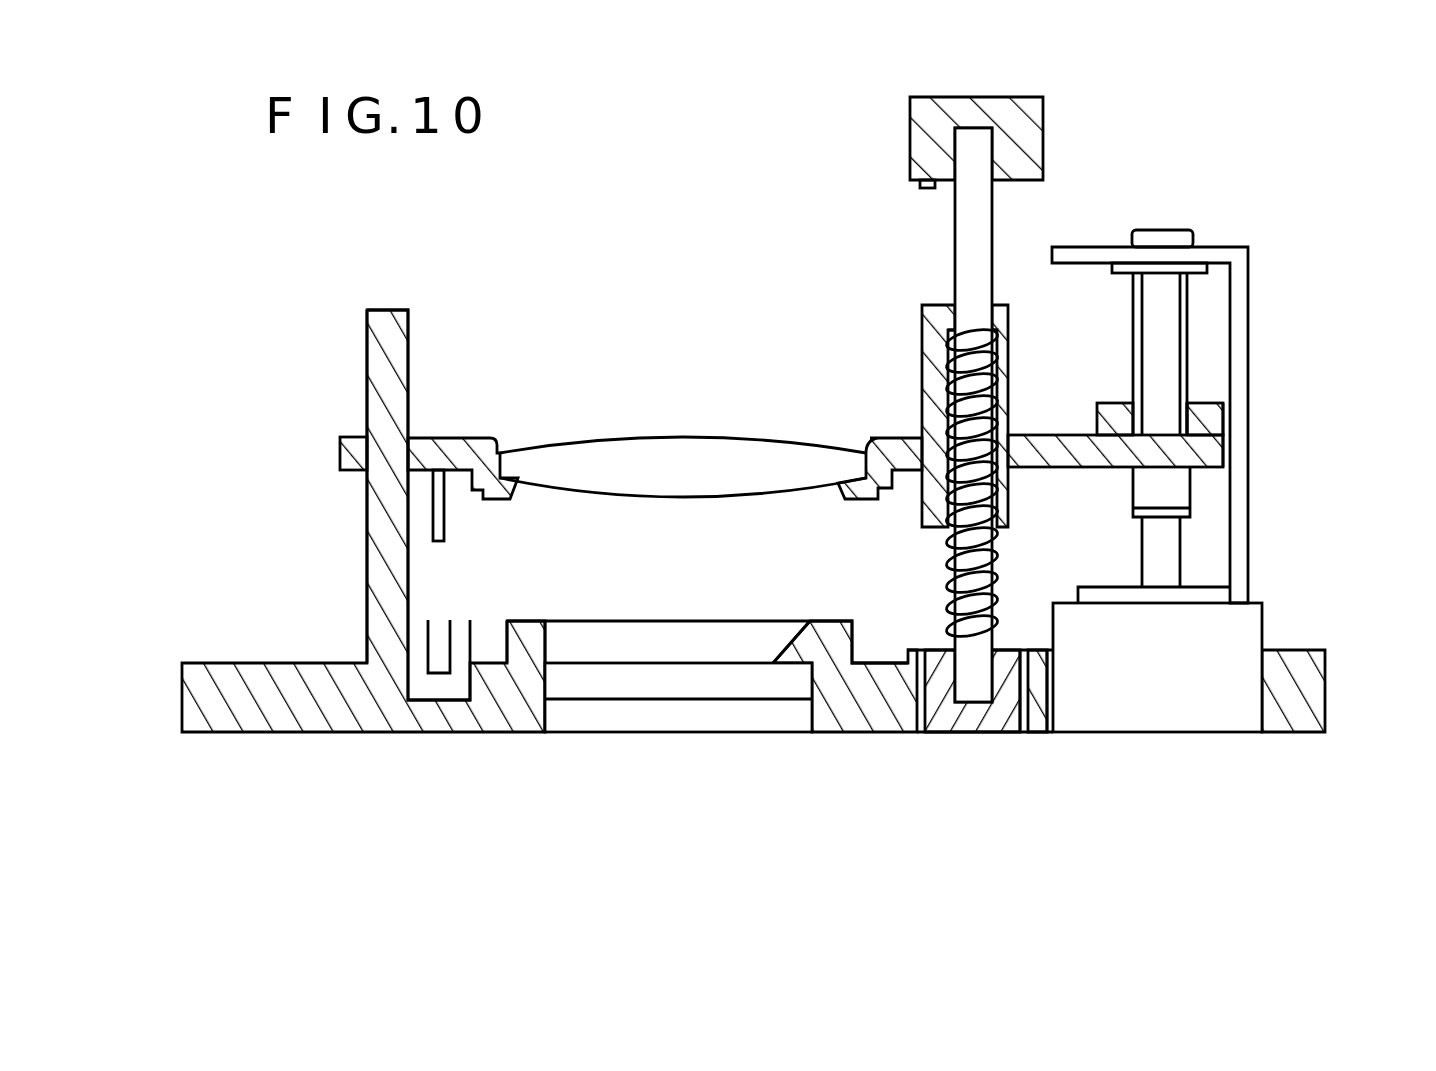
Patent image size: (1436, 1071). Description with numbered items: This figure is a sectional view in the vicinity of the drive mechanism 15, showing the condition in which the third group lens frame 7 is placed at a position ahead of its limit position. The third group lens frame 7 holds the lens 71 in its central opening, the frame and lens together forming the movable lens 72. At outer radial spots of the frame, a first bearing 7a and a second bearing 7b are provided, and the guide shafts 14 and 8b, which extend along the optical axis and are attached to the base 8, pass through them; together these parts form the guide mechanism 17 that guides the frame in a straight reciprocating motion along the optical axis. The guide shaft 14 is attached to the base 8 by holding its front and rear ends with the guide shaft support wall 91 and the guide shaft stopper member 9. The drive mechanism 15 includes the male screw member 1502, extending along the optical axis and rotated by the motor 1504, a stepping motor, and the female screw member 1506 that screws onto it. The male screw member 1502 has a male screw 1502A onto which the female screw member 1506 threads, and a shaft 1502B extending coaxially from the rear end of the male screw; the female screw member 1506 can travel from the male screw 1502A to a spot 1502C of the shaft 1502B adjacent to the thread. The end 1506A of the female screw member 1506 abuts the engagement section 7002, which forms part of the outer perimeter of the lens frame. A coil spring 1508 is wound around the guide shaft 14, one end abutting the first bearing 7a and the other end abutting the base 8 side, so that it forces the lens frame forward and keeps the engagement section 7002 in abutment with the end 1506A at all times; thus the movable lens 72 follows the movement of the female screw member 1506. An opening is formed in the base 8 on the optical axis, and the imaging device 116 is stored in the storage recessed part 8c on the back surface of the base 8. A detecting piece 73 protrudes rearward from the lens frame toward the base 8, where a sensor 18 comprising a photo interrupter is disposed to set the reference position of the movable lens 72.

The third group lens frame 7 is at (480, 437).
The first bearing 7a is at (920, 345).
The second bearing 7b is at (345, 437).
The lens 71 is at (572, 437).
The movable lens 72 is at (665, 364).
The detecting piece 73 is at (452, 490).
The engagement section 7002 is at (1216, 486).
The base 8 is at (238, 732).
The guide shaft 8b is at (367, 340).
The storage recessed part 8c is at (545, 712).
The guide shaft stopper member 9 is at (1006, 732).
The guide shaft 14 is at (935, 236).
The drive mechanism 15 is at (1223, 457).
The guide mechanism 17 is at (950, 366).
The sensor 18 is at (472, 633).
The guide shaft support wall 91 is at (1000, 97).
The imaging device 116 is at (697, 700).
The male screw member 1502 is at (1190, 303).
The male screw 1502A is at (1190, 350).
The shaft 1502B is at (1185, 557).
The spot 1502C is at (1185, 513).
The motor 1504 is at (1278, 622).
The female screw member 1506 is at (1213, 404).
The end 1506A is at (1228, 452).
The coil spring 1508 is at (990, 325).